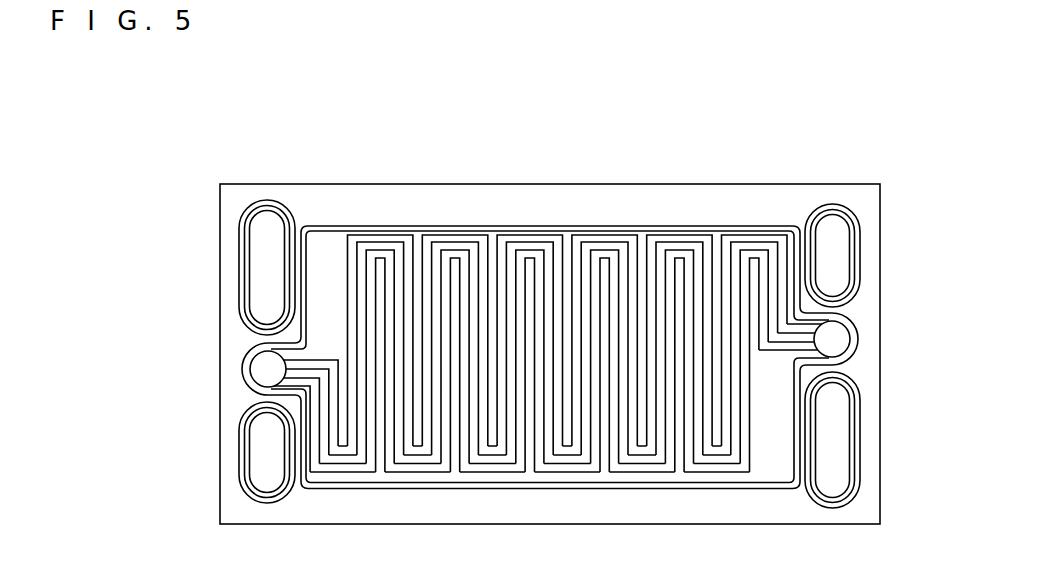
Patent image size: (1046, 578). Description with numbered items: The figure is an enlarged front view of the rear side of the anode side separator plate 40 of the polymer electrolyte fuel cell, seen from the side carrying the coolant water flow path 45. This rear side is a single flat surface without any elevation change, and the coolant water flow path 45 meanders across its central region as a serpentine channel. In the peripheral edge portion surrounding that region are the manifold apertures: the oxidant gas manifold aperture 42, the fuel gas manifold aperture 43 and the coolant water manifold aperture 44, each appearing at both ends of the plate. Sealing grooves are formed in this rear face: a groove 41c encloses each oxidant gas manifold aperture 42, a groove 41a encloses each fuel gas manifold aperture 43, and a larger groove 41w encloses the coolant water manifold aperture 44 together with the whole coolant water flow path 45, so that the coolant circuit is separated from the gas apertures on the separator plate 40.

The anode side separator plate 40 is at (620, 184).
The groove 41w is at (337, 226).
The groove 41a is at (861, 281).
The groove 41c is at (858, 489).
The oxidant gas manifold aperture 42 is at (262, 264).
The fuel gas manifold aperture 43 is at (270, 450).
The coolant water manifold aperture 44 is at (265, 368).
The coolant water flow path 45 is at (747, 245).